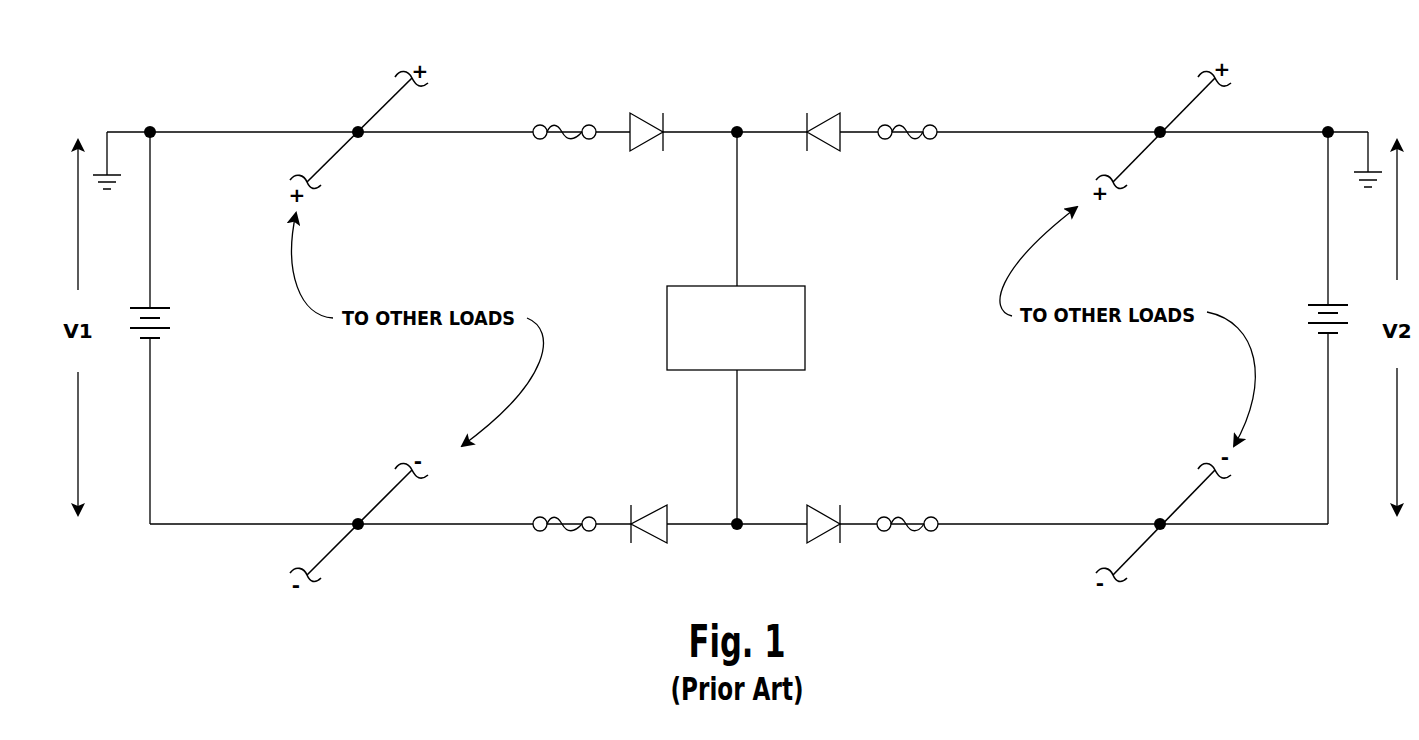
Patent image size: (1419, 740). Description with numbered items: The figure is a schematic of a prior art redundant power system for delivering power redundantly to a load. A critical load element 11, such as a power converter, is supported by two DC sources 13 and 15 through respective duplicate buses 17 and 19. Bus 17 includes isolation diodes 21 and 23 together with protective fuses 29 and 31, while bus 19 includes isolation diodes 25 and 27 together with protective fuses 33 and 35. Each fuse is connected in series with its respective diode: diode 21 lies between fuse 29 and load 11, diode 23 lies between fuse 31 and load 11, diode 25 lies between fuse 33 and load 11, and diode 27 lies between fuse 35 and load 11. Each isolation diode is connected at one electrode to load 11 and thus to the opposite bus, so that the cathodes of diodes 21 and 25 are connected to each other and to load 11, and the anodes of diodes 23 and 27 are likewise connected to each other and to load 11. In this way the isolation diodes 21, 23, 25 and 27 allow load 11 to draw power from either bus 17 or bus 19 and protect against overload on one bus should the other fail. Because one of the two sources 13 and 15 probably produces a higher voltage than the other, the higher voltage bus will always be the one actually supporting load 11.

The critical load element 11 is at (805, 330).
The DC source 13 is at (162, 306).
The DC source 15 is at (1313, 302).
The bus 17 is at (241, 130).
The bus 19 is at (1048, 129).
The isolation diode 21 is at (646, 116).
The isolation diode 23 is at (648, 541).
The isolation diode 25 is at (823, 118).
The isolation diode 27 is at (824, 543).
The protective fuse 29 is at (558, 127).
The protective fuse 31 is at (558, 520).
The protective fuse 33 is at (905, 127).
The protective fuse 35 is at (905, 535).